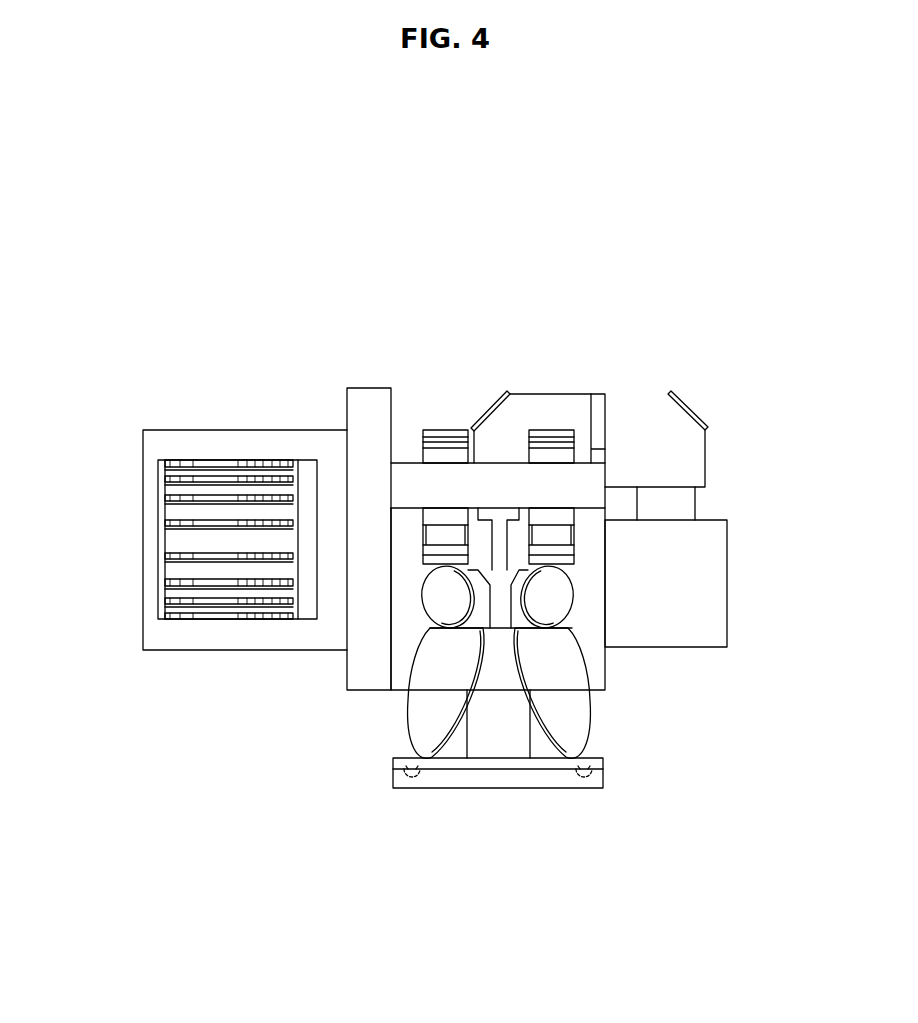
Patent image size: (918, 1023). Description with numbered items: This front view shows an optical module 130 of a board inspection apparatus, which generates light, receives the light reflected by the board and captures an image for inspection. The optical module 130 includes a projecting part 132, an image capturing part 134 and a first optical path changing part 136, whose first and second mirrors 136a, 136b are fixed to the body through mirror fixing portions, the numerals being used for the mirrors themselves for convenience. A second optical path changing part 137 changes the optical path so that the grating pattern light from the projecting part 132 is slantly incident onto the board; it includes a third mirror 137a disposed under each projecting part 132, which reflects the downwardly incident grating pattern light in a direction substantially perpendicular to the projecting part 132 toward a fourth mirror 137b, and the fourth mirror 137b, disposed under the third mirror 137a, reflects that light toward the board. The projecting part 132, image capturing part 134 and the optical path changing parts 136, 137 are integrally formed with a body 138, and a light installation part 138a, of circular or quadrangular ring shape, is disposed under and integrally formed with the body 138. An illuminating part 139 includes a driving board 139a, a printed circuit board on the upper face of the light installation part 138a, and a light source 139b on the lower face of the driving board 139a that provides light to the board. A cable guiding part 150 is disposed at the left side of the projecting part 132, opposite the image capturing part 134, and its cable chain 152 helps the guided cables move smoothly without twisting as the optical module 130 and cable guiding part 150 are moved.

The optical module 130 is at (591, 374).
The projecting part 132 is at (443, 430).
The image capturing part 134 is at (727, 543).
The first optical path changing part 136 is at (677, 208).
The first mirror 136a is at (503, 402).
The second mirror 136b is at (700, 400).
The second optical path changing part 137 is at (738, 707).
The third mirror 137a is at (562, 605).
The fourth mirror 137b is at (580, 723).
The body 138 is at (365, 691).
The light installation part 138a is at (412, 789).
The illuminating part 139 is at (710, 838).
The driving board 139a is at (603, 763).
The light source 139b is at (583, 785).
The cable guiding part 150 is at (209, 422).
The cable chain 152 is at (160, 538).